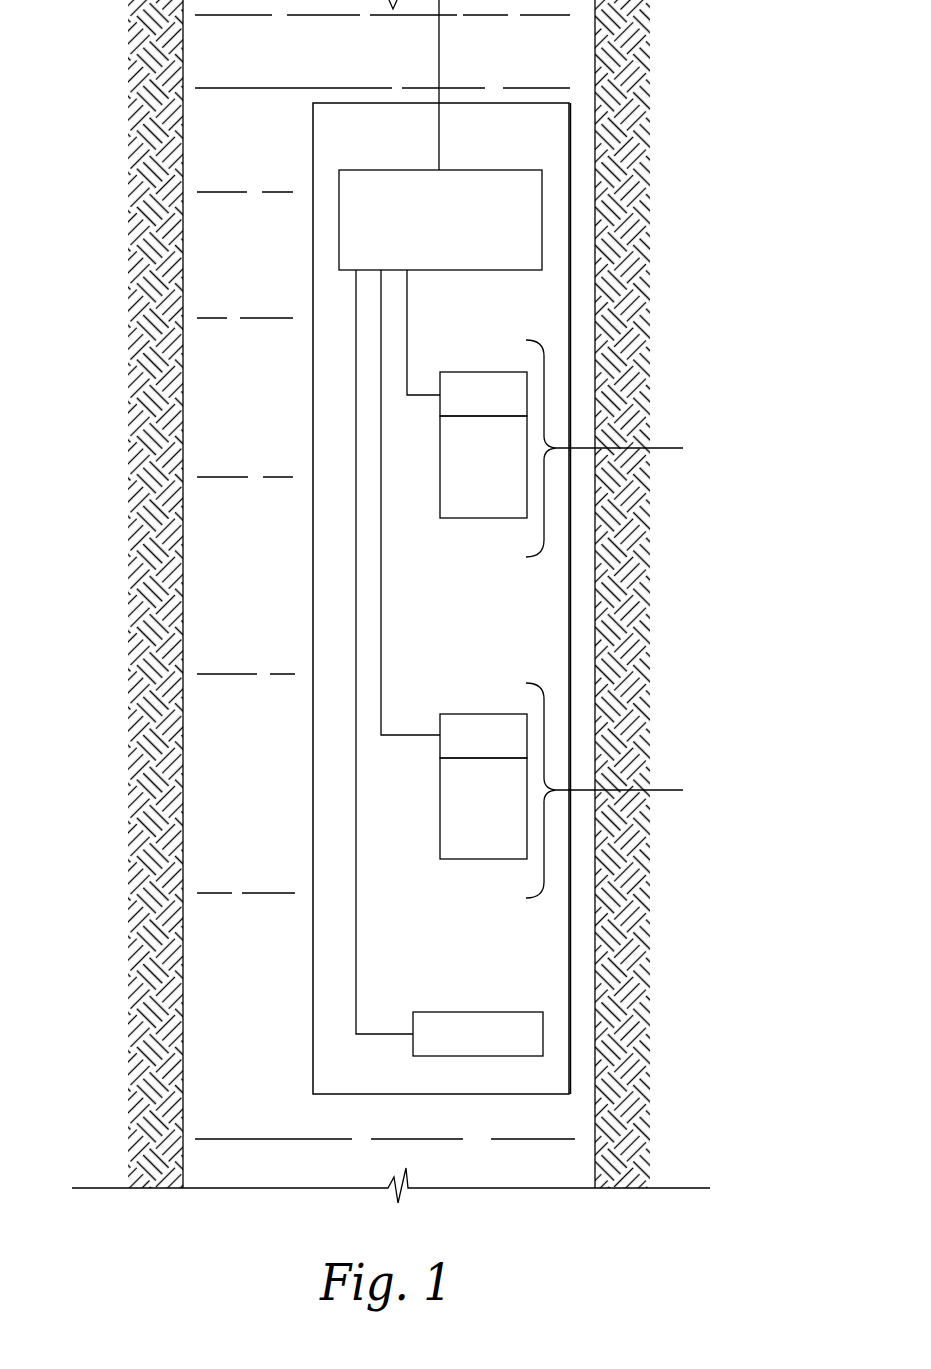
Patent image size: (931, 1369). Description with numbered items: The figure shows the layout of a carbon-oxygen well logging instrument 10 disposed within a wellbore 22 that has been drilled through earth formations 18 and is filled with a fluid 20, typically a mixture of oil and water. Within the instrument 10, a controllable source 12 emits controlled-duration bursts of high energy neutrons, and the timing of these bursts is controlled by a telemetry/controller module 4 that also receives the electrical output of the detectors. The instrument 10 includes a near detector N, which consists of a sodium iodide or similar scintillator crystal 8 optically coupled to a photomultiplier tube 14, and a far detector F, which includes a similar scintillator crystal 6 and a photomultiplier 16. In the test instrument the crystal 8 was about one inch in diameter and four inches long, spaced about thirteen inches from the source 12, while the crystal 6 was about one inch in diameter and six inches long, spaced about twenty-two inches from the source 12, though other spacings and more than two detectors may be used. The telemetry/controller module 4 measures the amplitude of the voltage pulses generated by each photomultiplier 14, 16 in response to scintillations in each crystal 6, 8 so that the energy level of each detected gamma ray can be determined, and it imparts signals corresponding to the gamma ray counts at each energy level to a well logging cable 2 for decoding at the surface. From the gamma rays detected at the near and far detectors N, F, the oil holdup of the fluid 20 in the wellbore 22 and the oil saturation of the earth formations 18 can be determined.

The well logging cable 2 is at (440, 46).
The telemetry/controller module 4 is at (491, 170).
The scintillator crystal 6 is at (476, 519).
The scintillator crystal 8 is at (483, 860).
The instrument 10 is at (311, 407).
The controllable source 12 is at (486, 1012).
The photomultiplier tube 14 is at (479, 714).
The photomultiplier 16 is at (482, 372).
The earth formations 18 is at (787, 581).
The fluid 20 is at (283, 58).
The wellbore 22 is at (225, 573).
The far detector F is at (618, 448).
The near detector N is at (621, 790).